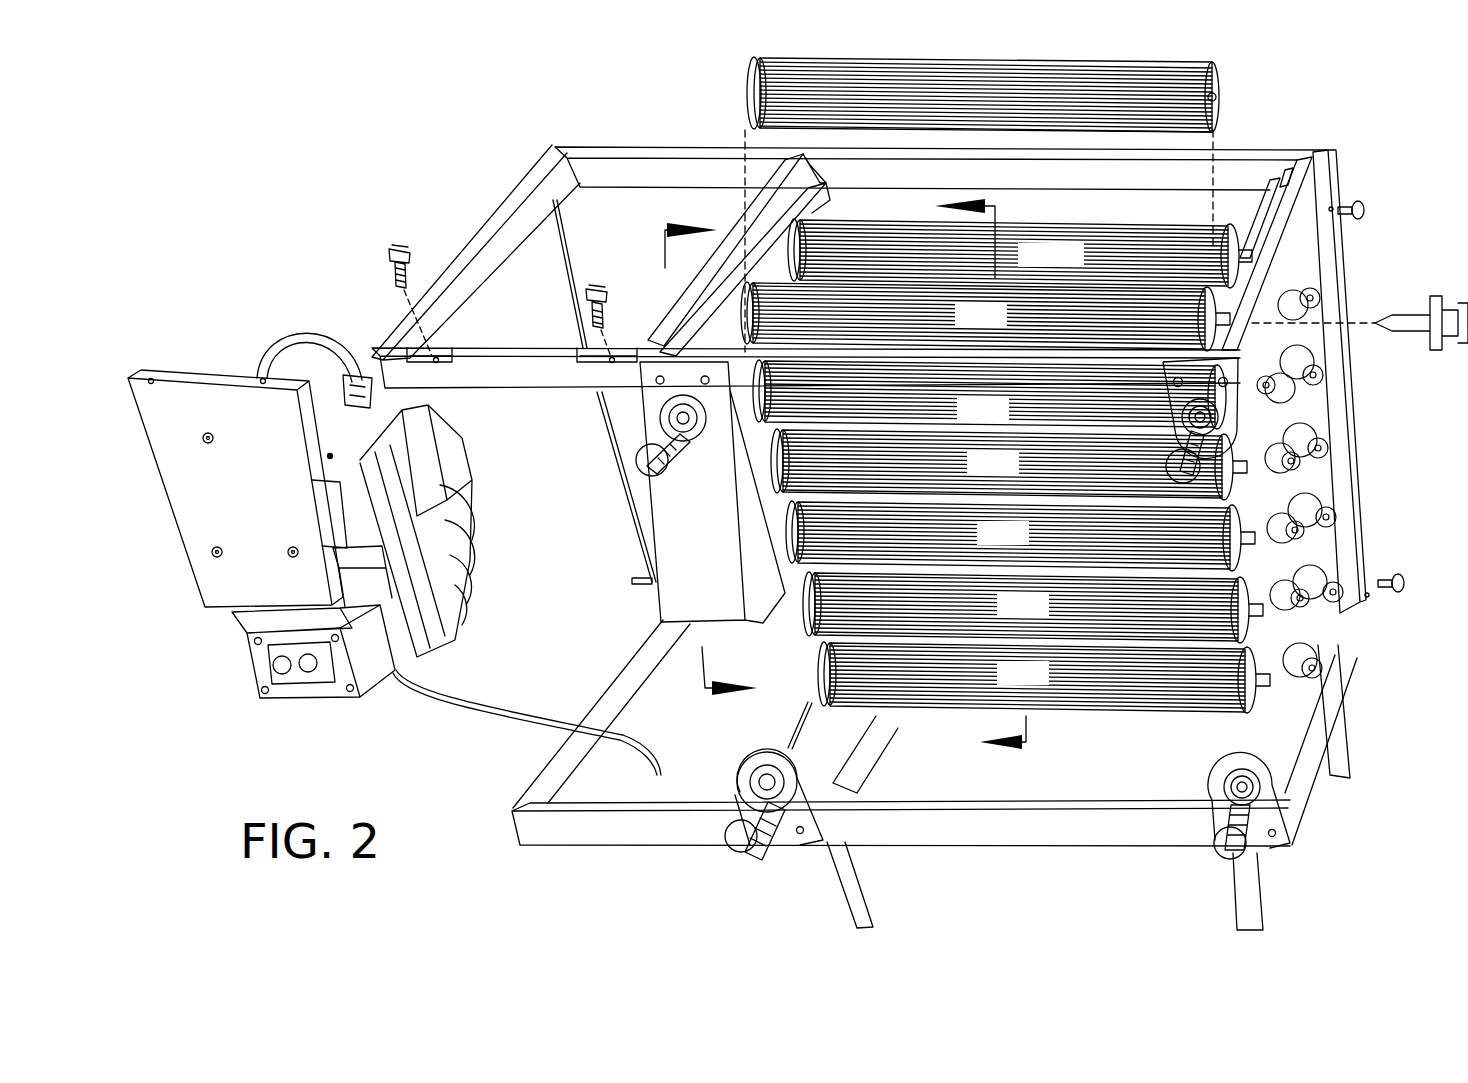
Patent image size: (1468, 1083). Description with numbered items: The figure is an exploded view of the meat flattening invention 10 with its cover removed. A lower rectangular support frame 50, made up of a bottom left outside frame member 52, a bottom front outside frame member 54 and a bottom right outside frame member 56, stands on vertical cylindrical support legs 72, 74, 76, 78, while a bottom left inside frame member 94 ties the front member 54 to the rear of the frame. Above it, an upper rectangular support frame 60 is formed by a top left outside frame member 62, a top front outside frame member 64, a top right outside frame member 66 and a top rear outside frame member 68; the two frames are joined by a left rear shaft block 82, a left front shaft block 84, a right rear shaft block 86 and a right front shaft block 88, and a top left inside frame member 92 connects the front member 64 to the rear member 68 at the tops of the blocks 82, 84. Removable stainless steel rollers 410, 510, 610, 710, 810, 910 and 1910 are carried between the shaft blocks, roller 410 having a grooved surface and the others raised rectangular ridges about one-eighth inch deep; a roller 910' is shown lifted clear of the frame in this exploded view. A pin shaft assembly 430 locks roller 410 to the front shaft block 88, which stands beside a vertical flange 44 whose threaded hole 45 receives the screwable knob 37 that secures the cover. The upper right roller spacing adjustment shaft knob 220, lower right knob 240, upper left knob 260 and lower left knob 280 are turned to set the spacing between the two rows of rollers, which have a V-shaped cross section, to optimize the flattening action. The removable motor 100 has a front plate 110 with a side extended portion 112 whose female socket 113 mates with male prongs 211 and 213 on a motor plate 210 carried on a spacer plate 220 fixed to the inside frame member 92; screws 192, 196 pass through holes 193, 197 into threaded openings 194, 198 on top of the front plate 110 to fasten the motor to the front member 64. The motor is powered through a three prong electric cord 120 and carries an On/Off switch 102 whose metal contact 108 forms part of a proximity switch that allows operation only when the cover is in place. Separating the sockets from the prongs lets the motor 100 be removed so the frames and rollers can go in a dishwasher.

The meat flattening invention 10 is at (437, 247).
The removable motor 100 is at (240, 350).
The front plate 110 is at (262, 517).
The side extended portion 112 is at (312, 470).
The female socket 113 is at (328, 457).
The threaded opening 194 is at (151, 378).
The threaded opening 198 is at (263, 378).
The metal contact 108 is at (246, 652).
The On/Off switch 102 is at (310, 702).
The three prong electric cord 120 is at (502, 718).
The upper rectangular support frame 60 is at (515, 192).
The top left outside frame member 62 is at (487, 257).
The top front outside frame member 64 is at (523, 377).
The top right outside frame member 66 is at (1300, 229).
The top rear outside frame member 68 is at (1088, 190).
The left rear shaft block 82 is at (820, 205).
The left front shaft block 84 is at (730, 262).
The right rear shaft block 86 is at (1278, 185).
The right front shaft block 88 is at (1257, 250).
The top left inside frame member 92 is at (737, 236).
The screw 192 is at (390, 251).
The hole 193 is at (438, 358).
The screw 196 is at (603, 291).
The hole 197 is at (612, 356).
The vertical flange 44 is at (1337, 256).
The threaded hole 45 is at (1333, 207).
The screwable knob 37 is at (1366, 210).
The pin shaft assembly 430 is at (1410, 332).
The motor plate 210 is at (655, 545).
The prong 211 is at (636, 581).
The prong 213 is at (625, 468).
The upper left roller spacing adjustment shaft knob 260 is at (658, 472).
The spacer plate 220 is at (763, 595).
The lower rectangular support frame 50 is at (578, 667).
The bottom left outside frame member 52 is at (632, 650).
The bottom front outside frame member 54 is at (1050, 838).
The bottom right outside frame member 56 is at (1298, 787).
The vertical frame cylindrical support leg 72 is at (848, 877).
The vertical frame cylindrical support leg 74 is at (1248, 893).
The vertical frame cylindrical support leg 76 is at (1350, 752).
The vertical frame cylindrical support leg 78 is at (888, 733).
The bottom left inside frame member 94 is at (748, 760).
The lower left roller spacing adjustment shaft knob 280 is at (740, 842).
The lower right roller spacing adjustment knob 240 is at (1228, 842).
The roller 910' is at (1023, 204).
The removable stainless steel roller 1910 is at (1080, 267).
The removable stainless steel roller 910 is at (985, 316).
The removable stainless steel roller 810 is at (1005, 422).
The removable stainless steel roller 710 is at (1015, 475).
The removable stainless steel roller 610 is at (1025, 545).
The removable stainless steel roller 510 is at (1045, 617).
The removable stainless steel roller 410 is at (1045, 685).